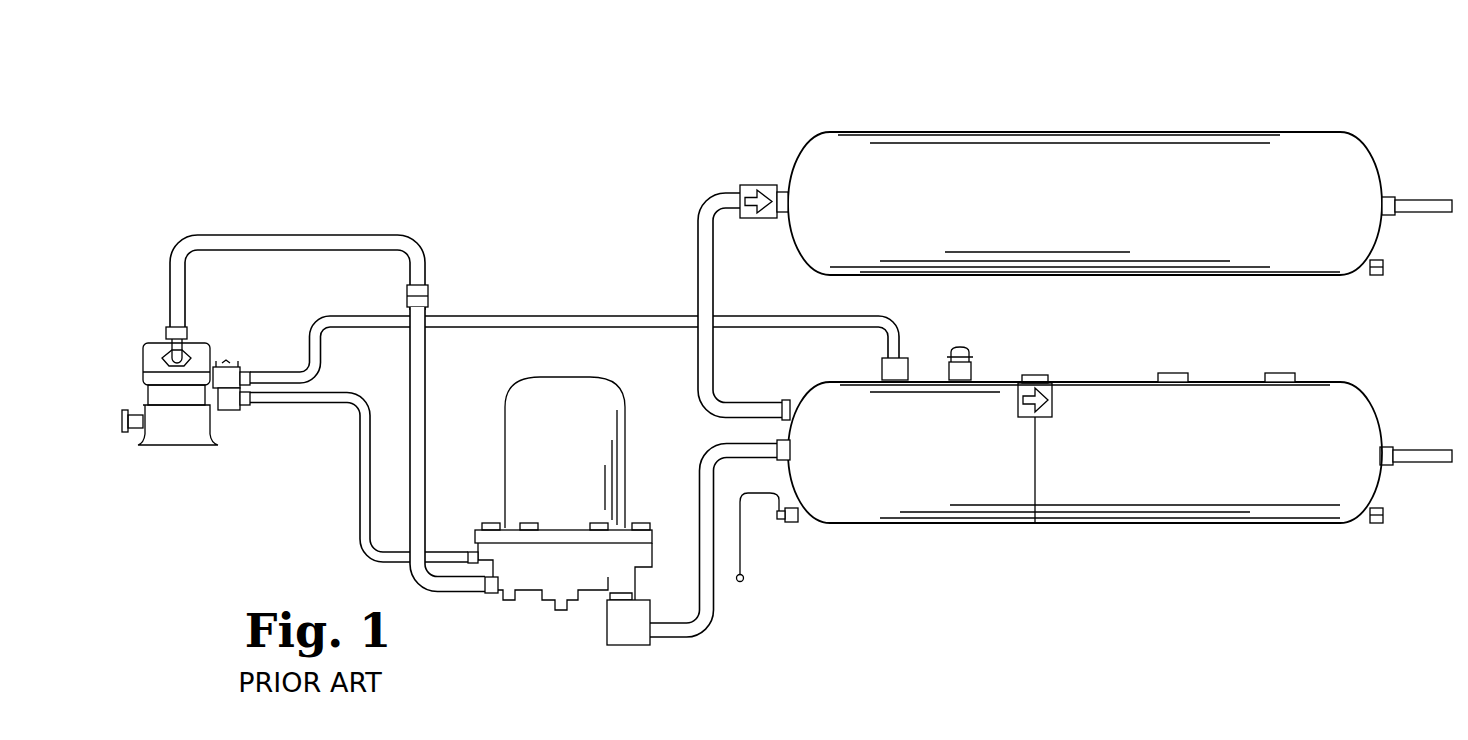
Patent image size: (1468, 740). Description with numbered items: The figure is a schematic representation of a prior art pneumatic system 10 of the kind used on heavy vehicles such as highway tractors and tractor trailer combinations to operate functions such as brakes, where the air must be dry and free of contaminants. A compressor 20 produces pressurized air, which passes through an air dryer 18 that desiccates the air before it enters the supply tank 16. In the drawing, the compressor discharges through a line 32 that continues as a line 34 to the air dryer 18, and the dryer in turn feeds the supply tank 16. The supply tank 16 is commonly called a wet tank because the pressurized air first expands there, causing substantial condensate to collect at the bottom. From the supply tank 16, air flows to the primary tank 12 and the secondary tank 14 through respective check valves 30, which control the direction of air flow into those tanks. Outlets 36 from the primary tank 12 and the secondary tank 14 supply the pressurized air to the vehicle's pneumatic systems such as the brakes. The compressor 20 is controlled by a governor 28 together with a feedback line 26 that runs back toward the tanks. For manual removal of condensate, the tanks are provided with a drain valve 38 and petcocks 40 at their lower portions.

The pneumatic system 10 is at (548, 150).
The primary tank 12 is at (1113, 132).
The secondary tank 14 is at (1205, 524).
The supply tank 16 is at (948, 523).
The air dryer 18 is at (505, 512).
The compressor 20 is at (178, 447).
The feedback line 26 is at (490, 316).
The governor 28 is at (228, 412).
The check valves 30 is at (760, 185).
The compressor discharge line 32 is at (273, 235).
The discharge line to air dryer 34 is at (427, 437).
The outlets 36 is at (1420, 198).
The drain valve 38 is at (788, 524).
The petcocks 40 is at (1376, 277).